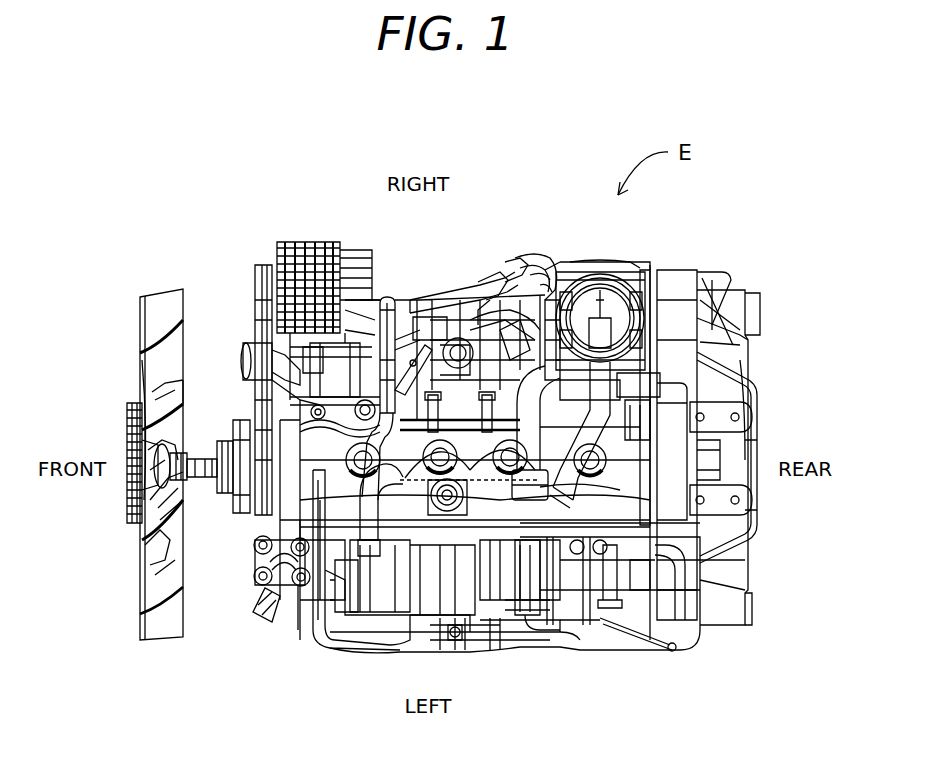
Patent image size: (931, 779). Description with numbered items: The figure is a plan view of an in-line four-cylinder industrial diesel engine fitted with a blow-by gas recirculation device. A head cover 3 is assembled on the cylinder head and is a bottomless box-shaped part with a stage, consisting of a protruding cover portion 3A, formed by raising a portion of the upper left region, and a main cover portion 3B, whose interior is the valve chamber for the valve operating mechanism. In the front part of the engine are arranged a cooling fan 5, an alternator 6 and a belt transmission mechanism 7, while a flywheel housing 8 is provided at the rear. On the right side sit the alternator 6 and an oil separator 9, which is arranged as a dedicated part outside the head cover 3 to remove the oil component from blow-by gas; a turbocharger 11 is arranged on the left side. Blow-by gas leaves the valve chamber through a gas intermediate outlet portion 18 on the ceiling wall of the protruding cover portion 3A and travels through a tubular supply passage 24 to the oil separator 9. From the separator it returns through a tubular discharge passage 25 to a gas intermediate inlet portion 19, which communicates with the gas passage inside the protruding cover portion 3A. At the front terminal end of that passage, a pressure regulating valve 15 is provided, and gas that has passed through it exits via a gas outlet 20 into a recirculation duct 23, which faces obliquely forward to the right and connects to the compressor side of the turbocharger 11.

The head cover 3 is at (693, 290).
The protruding cover portion 3A is at (578, 615).
The main cover portion 3B is at (302, 582).
The cooling fan 5 is at (160, 286).
The alternator 6 is at (303, 258).
The belt transmission mechanism 7 is at (245, 262).
The flywheel housing 8 is at (734, 372).
The oil separator 9 is at (575, 260).
The turbocharger 11 is at (475, 632).
The pressure regulating valve 15 is at (405, 292).
The gas intermediate outlet portion 18 is at (528, 610).
The gas intermediate inlet portion 19 is at (700, 540).
The gas outlet 20 is at (375, 575).
The recirculation duct 23 is at (215, 440).
The supply passage 24 is at (492, 258).
The discharge passage 25 is at (700, 443).